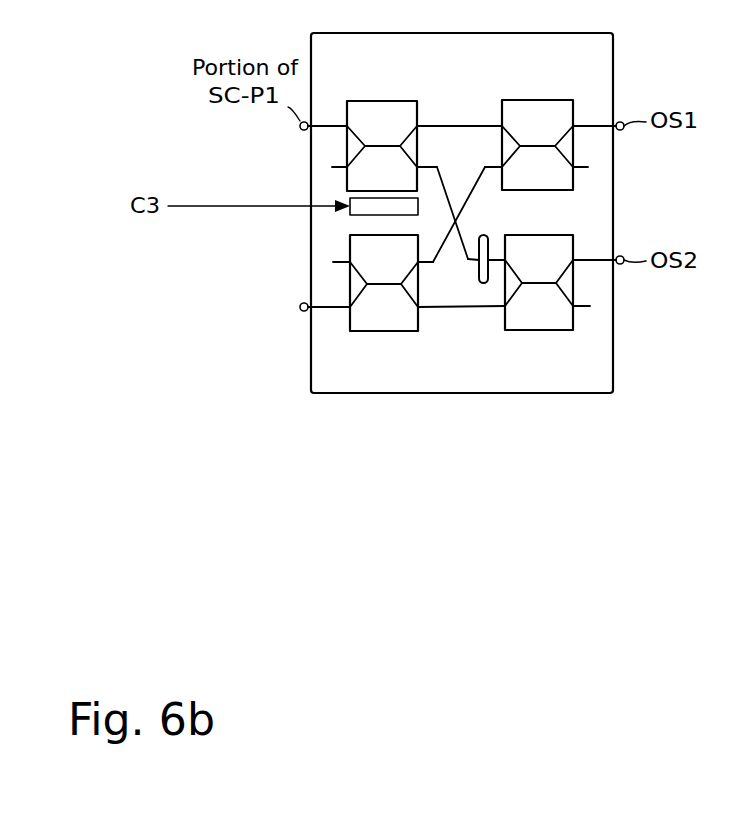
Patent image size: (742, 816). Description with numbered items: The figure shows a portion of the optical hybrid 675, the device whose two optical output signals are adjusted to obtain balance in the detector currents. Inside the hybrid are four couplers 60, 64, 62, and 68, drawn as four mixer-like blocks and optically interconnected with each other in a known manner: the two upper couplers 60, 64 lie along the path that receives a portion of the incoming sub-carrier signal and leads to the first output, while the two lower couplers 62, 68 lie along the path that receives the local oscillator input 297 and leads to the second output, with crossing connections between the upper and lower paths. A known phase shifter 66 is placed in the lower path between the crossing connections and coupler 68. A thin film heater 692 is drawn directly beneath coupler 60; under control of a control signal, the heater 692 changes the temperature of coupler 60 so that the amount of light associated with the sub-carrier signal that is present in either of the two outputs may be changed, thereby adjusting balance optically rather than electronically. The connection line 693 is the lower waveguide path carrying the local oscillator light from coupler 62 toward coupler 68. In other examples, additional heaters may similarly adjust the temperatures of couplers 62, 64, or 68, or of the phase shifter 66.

The coupler 60 is at (378, 101).
The coupler 62 is at (375, 332).
The coupler 64 is at (530, 100).
The phase shifter 66 is at (488, 234).
The coupler 68 is at (518, 332).
The local oscillator signal input 297 is at (302, 310).
The optical hybrid 675 is at (292, 519).
The thin film heater 692 is at (366, 214).
The local oscillator connection line 693 is at (460, 308).